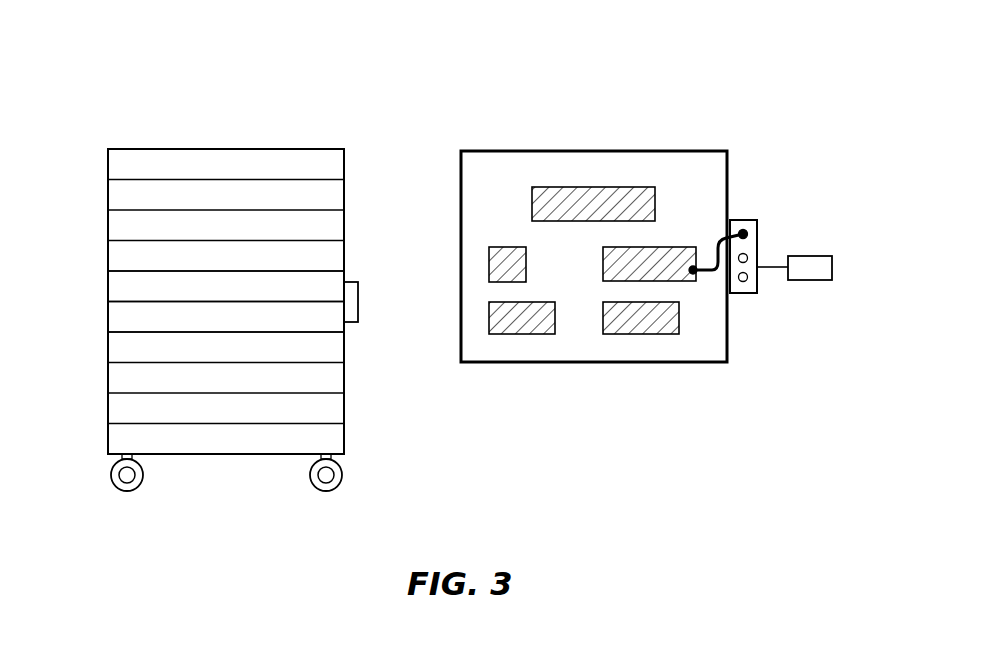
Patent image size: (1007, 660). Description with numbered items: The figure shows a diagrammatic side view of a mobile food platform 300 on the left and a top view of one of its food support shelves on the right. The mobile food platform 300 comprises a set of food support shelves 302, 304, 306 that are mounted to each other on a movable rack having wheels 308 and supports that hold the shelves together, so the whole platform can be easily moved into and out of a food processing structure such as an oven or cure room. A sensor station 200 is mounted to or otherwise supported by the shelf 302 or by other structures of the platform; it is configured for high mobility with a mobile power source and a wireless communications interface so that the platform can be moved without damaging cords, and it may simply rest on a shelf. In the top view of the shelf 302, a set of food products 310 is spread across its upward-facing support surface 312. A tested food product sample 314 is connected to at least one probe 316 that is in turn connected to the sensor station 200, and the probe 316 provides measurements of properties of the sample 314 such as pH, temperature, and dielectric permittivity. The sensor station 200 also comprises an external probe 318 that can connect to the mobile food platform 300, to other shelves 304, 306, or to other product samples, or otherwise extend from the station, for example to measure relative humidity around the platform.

The mobile food platform 300 is at (93, 150).
The food support shelf 302 is at (119, 286).
The food support shelf 304 is at (119, 318).
The food support shelf 306 is at (119, 346).
The wheels 308 is at (120, 490).
The sensor station 200 is at (357, 295).
The food products 310 is at (490, 305).
The upward-facing support surface 312 is at (608, 163).
The tested food product sample 314 is at (603, 268).
The probe 316 is at (693, 272).
The external probe 318 is at (832, 266).